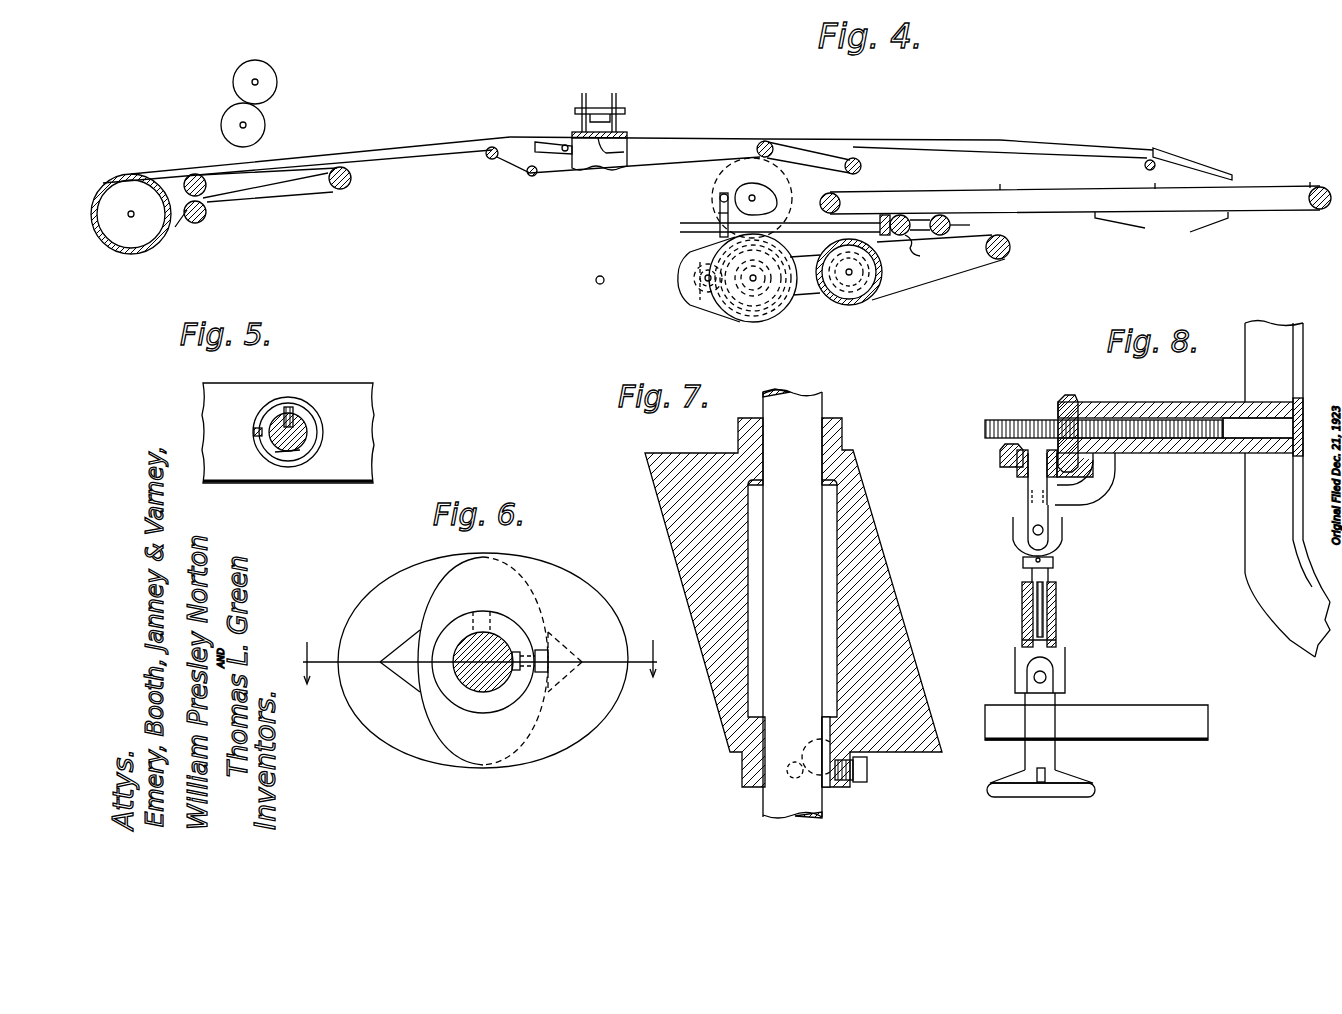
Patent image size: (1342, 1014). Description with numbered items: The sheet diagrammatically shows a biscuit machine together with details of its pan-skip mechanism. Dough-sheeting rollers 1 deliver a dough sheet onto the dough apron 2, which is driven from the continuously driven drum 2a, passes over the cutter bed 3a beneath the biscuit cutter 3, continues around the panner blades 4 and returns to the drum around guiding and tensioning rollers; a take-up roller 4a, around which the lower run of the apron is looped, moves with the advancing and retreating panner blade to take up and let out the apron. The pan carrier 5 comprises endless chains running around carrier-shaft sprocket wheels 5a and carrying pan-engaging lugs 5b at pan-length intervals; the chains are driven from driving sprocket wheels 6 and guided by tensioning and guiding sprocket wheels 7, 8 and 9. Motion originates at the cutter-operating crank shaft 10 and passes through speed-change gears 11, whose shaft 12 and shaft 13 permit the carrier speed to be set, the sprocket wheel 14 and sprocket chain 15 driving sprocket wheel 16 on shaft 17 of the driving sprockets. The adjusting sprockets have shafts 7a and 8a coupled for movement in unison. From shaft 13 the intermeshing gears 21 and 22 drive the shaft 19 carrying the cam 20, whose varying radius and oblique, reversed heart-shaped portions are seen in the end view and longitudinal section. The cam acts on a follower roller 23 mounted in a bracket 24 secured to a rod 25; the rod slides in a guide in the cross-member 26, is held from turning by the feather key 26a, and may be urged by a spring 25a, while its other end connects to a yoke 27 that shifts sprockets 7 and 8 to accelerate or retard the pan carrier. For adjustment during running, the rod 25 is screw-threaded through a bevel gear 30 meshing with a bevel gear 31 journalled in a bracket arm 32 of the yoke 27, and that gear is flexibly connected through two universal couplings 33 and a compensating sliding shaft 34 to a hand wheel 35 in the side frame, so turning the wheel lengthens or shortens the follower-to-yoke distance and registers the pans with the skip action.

In FIG. 4, the dough-sheeting rollers 1 is at (228, 108).
In FIG. 4, the dough apron 2 is at (510, 142).
In FIG. 4, the driving drum 2a is at (149, 250).
In FIG. 4, the biscuit cutter 3 is at (598, 115).
In FIG. 4, the cutter bed 3a is at (627, 150).
In FIG. 4, the panner blades 4 is at (1180, 162).
In FIG. 4, the take-up roller 4a is at (757, 149).
In FIG. 4, the pan carrier 5 is at (1265, 186).
In FIG. 4, the carrier-shaft sprocket wheels 5a is at (840, 195).
In FIG. 4, the pan-engaging lugs 5b is at (1161, 230).
In FIG. 4, the driving sprocket wheels 6 is at (882, 274).
In FIG. 4, the tensioning and guiding sprocket wheel 7 is at (906, 213).
In FIG. 4, the sprocket shaft 7a is at (927, 251).
In FIG. 4, the tensioning and guiding sprocket wheel 8 is at (945, 212).
In FIG. 4, the sprocket shaft 8a is at (970, 225).
In FIG. 4, the tensioning and guiding sprocket wheel 9 is at (1010, 247).
In FIG. 4, the cutter-operating crank shaft 10 is at (598, 284).
In FIG. 4, the speed-change gears 11 is at (715, 298).
In FIG. 4, the shaft of the speed-change gears 12 is at (705, 282).
In FIG. 4, the shaft of the speed-change gears 13 is at (752, 290).
In FIG. 4, the sprocket wheel 14 is at (772, 300).
In FIG. 4, the sprocket chain 15 is at (808, 296).
In FIG. 4, the sprocket wheel 16 is at (845, 306).
In FIG. 4, the shaft of the carrier driving sprockets 17 is at (853, 271).
In FIG. 4, the cam shaft 19 is at (757, 196).
In FIG. 6, the cam shaft 19 is at (487, 675).
In FIG. 7, the cam shaft 19 is at (775, 795).
In FIG. 4, the cam 20 is at (768, 205).
In FIG. 6, the cam 20 is at (385, 587).
In FIG. 7, the cam 20 is at (918, 665).
In FIG. 4, the gear 21 is at (717, 255).
In FIG. 4, the gear 22 is at (713, 183).
In FIG. 4, the follower roller 23 is at (713, 198).
In FIG. 4, the bracket 24 is at (718, 213).
In FIG. 4, the rod 25 is at (687, 230).
In FIG. 5, the rod 25 is at (300, 446).
In FIG. 8, the rod 25 is at (1000, 420).
In FIG. 5, the spring 25a is at (288, 468).
In FIG. 5, the cross-member 26 is at (355, 399).
In FIG. 5, the feather key 26a is at (300, 402).
In FIG. 4, the yoke 27 is at (885, 215).
In FIG. 8, the yoke 27 is at (1270, 603).
In FIG. 8, the bevel gear 30 is at (1065, 396).
In FIG. 8, the bevel gear 31 is at (990, 462).
In FIG. 8, the bracket arm 32 is at (1097, 473).
In FIG. 8, the universal couplings 33 is at (1060, 549).
In FIG. 8, the compensating sliding shaft 34 is at (1033, 572).
In FIG. 8, the hand wheel 35 is at (1097, 787).